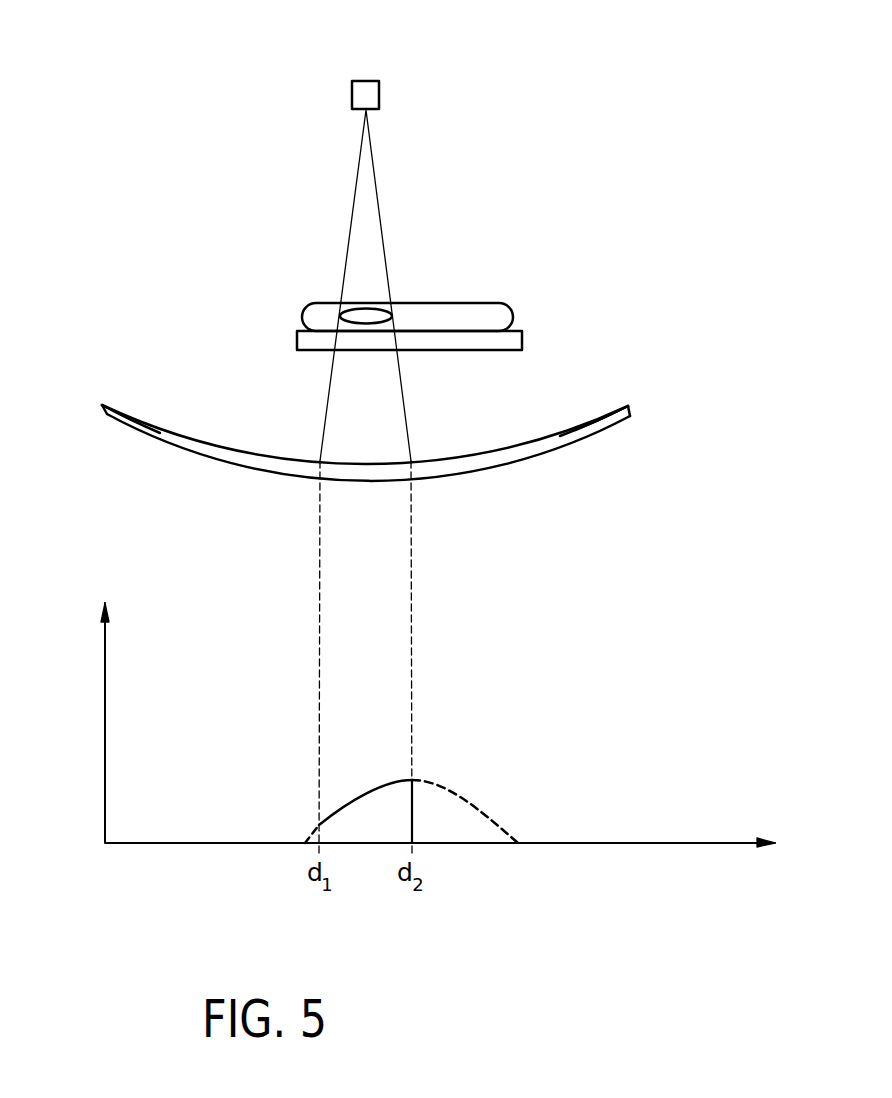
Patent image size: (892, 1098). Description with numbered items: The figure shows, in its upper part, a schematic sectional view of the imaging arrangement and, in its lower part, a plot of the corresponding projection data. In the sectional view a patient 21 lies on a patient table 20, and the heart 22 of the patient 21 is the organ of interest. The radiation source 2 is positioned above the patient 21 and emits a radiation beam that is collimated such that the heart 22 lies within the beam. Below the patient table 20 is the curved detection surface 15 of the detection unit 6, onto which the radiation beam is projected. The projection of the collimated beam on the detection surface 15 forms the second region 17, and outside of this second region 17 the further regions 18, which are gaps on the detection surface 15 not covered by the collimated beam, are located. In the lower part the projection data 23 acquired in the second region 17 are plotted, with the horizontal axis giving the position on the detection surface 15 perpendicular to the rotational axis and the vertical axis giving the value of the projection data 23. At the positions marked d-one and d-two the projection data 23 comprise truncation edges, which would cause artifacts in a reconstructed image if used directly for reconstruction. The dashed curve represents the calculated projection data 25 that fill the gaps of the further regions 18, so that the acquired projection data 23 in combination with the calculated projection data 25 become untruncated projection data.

The radiation source 2 is at (366, 86).
The detection unit 6 is at (533, 453).
The detection surface 15 is at (629, 405).
The second region 17 is at (353, 437).
The further regions 18 is at (138, 411).
The patient table 20 is at (297, 343).
The patient 21 is at (505, 303).
The heart 22 is at (395, 305).
The projection data 23 is at (380, 778).
The calculated projection data 25 is at (470, 810).